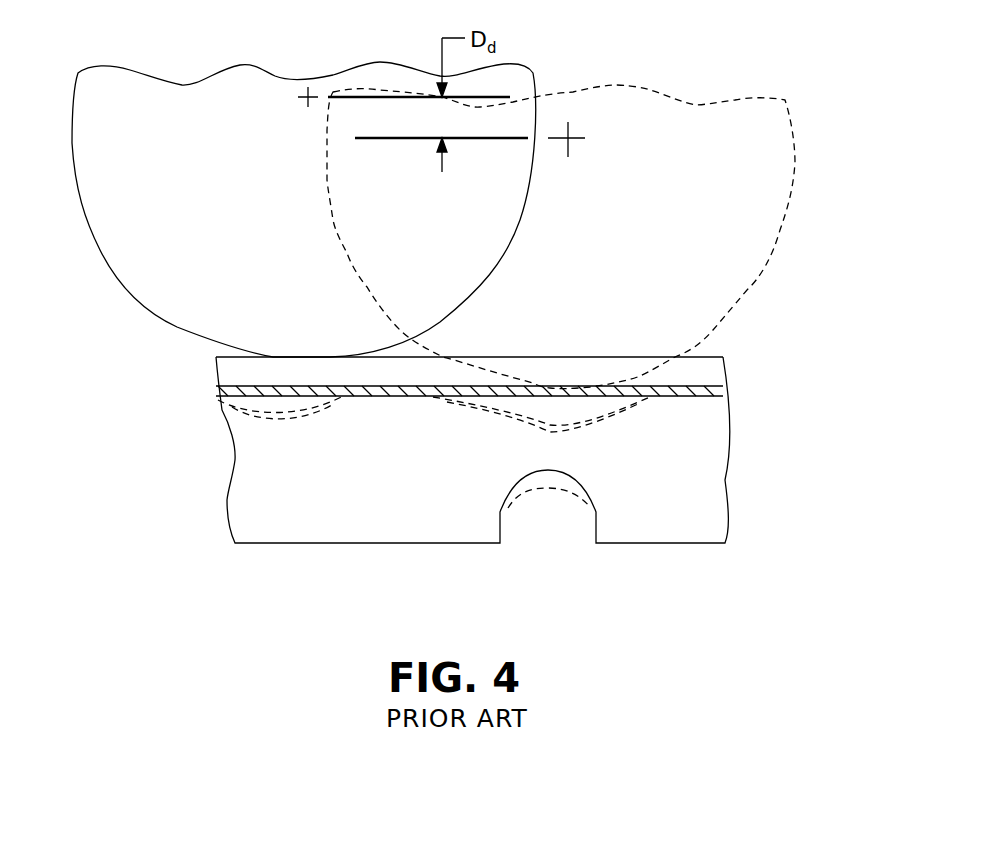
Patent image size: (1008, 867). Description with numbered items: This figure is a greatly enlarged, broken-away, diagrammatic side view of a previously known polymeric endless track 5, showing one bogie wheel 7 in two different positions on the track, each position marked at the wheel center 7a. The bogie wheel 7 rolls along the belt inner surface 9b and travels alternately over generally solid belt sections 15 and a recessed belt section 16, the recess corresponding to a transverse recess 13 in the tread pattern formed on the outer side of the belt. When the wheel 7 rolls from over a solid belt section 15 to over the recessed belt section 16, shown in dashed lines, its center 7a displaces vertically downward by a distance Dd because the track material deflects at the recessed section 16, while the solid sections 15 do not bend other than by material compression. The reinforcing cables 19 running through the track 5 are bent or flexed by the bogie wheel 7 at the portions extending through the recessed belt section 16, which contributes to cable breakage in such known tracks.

The endless track 5 is at (300, 553).
The bogie wheel 7 is at (245, 93).
The die center point 7a is at (305, 100).
The inner surface 9b is at (718, 355).
The transverse recess 13 is at (547, 523).
The solid belt section 15 is at (385, 473).
The recessed belt section 16 is at (565, 457).
The reinforcing cable 19 is at (698, 393).